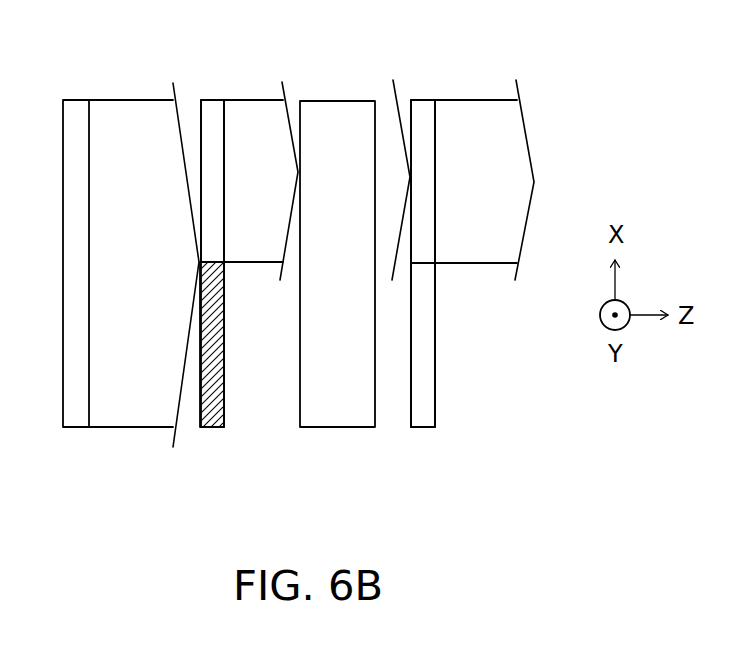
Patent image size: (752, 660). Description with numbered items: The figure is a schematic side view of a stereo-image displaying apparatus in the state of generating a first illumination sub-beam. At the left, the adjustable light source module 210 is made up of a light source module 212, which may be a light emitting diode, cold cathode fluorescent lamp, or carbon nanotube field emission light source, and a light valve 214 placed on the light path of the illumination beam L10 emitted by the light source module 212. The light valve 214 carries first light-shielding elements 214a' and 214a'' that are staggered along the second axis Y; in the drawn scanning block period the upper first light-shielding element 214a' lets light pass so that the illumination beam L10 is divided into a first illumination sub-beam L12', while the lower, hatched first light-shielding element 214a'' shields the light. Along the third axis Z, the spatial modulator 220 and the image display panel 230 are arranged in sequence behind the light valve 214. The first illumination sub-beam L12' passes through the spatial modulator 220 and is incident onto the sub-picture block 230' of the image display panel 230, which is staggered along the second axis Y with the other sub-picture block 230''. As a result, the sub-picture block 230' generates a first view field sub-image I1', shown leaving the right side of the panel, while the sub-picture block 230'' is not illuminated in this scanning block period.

The adjustable light source module 210 is at (163, 282).
The light source module 212 is at (74, 418).
The light valve 214 is at (220, 261).
The first light-shielding element 214a' is at (210, 145).
The first light-shielding element 214a'' is at (233, 361).
The spatial modulator 220 is at (335, 407).
The image display panel 230 is at (453, 261).
The sub-picture block 230' is at (461, 146).
The sub-picture block 230'' is at (412, 378).
The illumination beam L10 is at (104, 116).
The first illumination sub-beam L12' is at (357, 154).
The first view field sub-image I1' is at (554, 154).